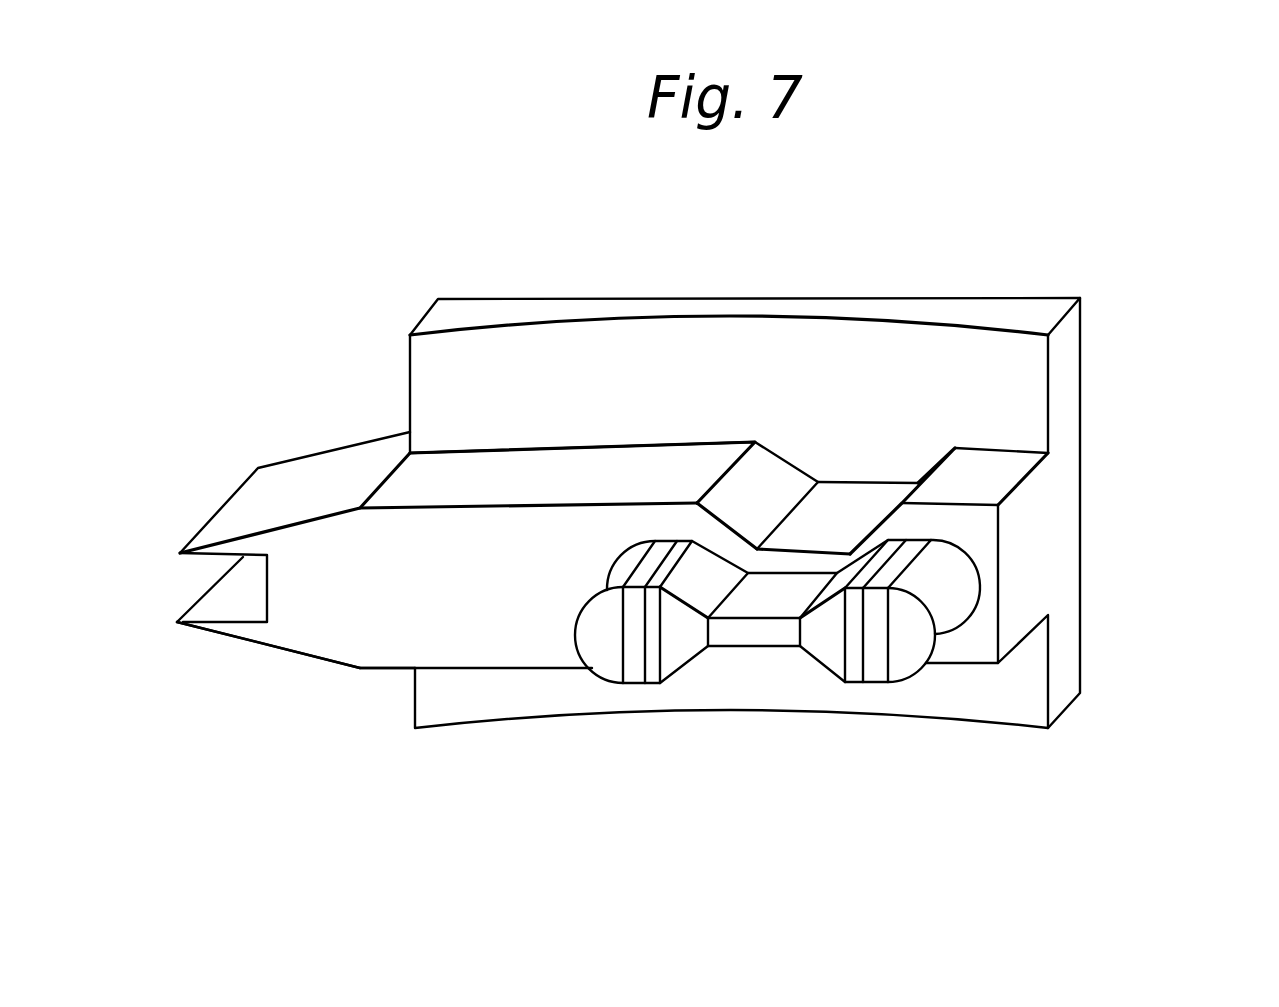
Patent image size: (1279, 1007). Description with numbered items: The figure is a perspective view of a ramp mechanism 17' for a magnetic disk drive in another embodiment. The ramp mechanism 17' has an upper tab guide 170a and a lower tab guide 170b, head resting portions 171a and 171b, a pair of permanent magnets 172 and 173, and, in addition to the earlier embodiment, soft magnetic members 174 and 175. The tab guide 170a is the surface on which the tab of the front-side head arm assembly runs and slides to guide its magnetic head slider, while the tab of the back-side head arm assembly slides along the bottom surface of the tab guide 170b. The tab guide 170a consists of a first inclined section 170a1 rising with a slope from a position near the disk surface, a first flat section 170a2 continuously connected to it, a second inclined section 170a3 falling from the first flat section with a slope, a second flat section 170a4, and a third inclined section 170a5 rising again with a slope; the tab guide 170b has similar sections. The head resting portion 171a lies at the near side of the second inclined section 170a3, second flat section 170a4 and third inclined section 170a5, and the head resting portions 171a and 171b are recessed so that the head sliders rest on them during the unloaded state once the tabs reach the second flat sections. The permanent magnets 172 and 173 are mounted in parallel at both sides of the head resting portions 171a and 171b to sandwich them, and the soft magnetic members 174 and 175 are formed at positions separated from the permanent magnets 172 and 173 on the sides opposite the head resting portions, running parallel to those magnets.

The ramp mechanism 17' is at (697, 424).
The tab guide 170a is at (533, 468).
The first inclined section 170a1 is at (313, 480).
The first flat section 170a2 is at (635, 473).
The second inclined section 170a3 is at (772, 483).
The second flat section 170a4 is at (863, 500).
The third inclined section 170a5 is at (928, 497).
The tab guide 170b is at (270, 654).
The head resting portion 171a is at (753, 605).
The head resting portion 171b is at (775, 678).
The permanent magnet 172 is at (685, 650).
The permanent magnet 173 is at (828, 652).
The soft magnetic member 174 is at (633, 668).
The soft magnetic member 175 is at (875, 663).